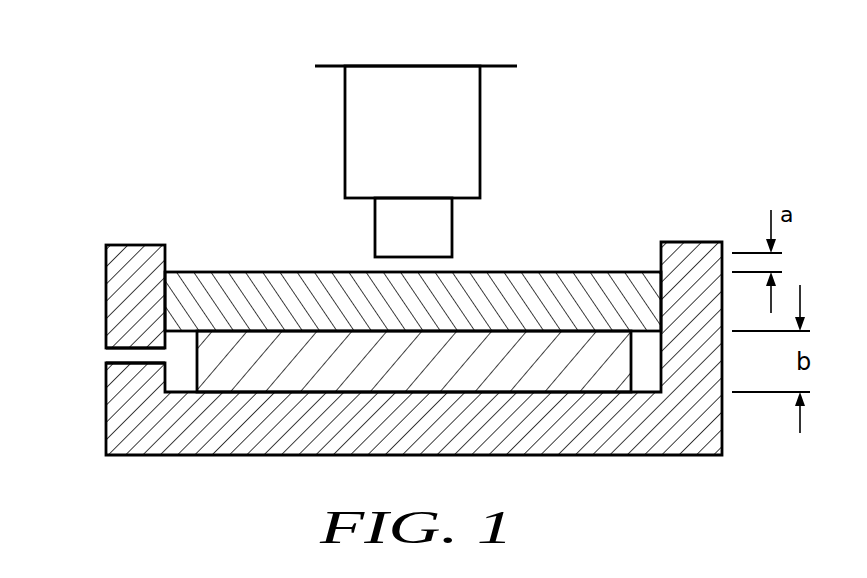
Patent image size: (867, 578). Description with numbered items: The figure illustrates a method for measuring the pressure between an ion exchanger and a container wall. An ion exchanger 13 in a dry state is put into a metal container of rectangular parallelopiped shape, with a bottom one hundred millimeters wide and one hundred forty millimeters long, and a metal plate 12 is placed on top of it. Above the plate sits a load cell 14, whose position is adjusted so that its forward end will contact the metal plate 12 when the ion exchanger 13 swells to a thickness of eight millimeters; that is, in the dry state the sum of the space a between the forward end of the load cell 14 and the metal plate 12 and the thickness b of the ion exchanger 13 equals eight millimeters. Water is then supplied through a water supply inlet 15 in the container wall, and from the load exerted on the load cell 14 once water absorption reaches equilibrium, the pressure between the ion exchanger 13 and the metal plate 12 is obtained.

The metal plate 12 is at (513, 287).
The ion exchanger 13 is at (514, 376).
The load cell 14 is at (355, 133).
The water supply inlet 15 is at (105, 355).